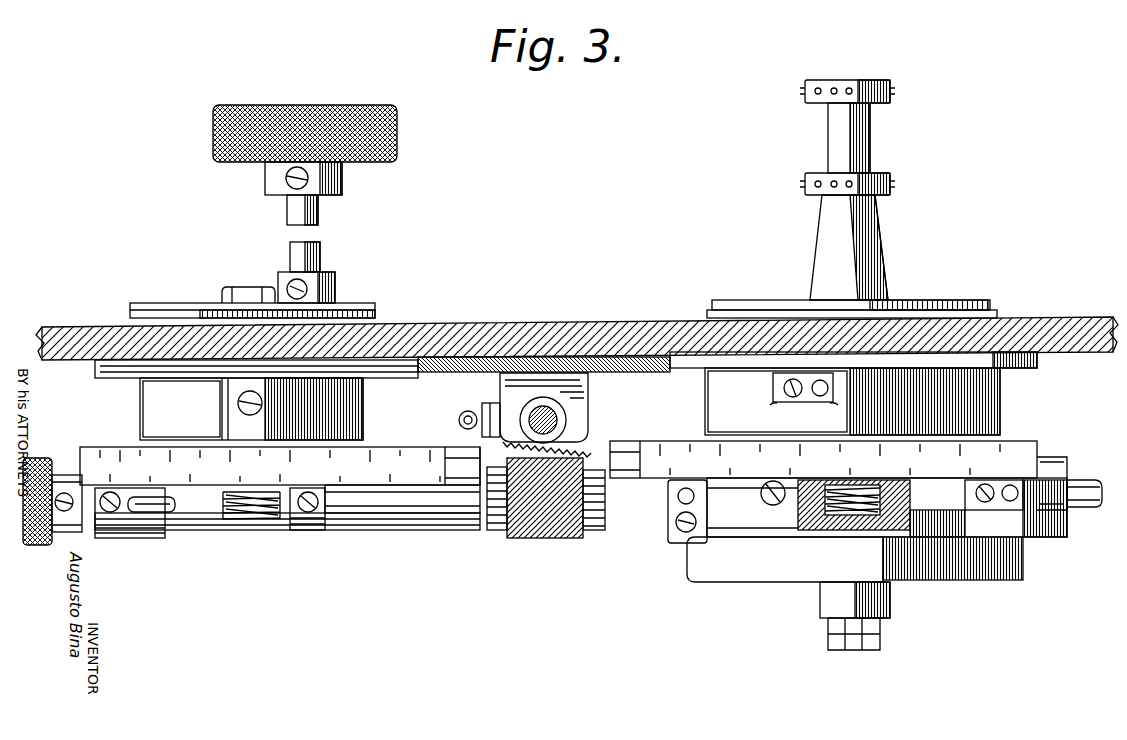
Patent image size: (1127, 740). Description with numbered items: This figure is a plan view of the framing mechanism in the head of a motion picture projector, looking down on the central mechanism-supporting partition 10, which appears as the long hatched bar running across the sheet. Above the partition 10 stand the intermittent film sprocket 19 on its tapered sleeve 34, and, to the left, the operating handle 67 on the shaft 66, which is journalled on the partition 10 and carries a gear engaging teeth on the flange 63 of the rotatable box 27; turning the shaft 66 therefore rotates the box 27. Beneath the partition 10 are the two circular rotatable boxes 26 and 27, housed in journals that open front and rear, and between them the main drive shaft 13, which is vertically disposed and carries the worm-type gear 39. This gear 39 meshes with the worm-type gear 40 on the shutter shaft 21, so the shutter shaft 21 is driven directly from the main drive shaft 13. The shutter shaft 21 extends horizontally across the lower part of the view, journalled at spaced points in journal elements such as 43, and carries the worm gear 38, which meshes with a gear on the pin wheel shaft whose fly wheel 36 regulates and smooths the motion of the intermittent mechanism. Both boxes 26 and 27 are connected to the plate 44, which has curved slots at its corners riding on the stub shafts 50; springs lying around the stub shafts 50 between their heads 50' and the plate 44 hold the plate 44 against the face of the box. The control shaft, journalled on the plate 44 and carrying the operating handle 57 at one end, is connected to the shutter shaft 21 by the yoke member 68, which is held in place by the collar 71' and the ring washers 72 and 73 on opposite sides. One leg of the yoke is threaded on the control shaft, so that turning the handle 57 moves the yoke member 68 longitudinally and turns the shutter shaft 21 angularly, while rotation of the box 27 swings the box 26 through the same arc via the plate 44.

The partition 10 is at (576, 322).
The main drive shaft 13 is at (585, 416).
The intermittent film sprocket 19 is at (819, 197).
The shutter shaft 21 is at (1098, 470).
The rotatable box 26 is at (770, 395).
The rotatable box 27 is at (340, 405).
The sleeve 34 is at (838, 268).
The fly wheel 36 is at (772, 575).
The worm gear 38 is at (818, 532).
The gear 39 is at (570, 448).
The gear 40 is at (532, 540).
The journal element 43 is at (1052, 460).
The plate 44 is at (410, 450).
The stub shafts 50 is at (852, 526).
The head 50' is at (246, 523).
The operating handle 57 is at (40, 460).
The flange 63 is at (374, 313).
The shaft 66 is at (320, 207).
The operating handle 67 is at (294, 106).
The yoke member 68 is at (394, 520).
The collar 71' is at (291, 534).
The ring washer 72 is at (340, 528).
The ring washer 73 is at (497, 532).